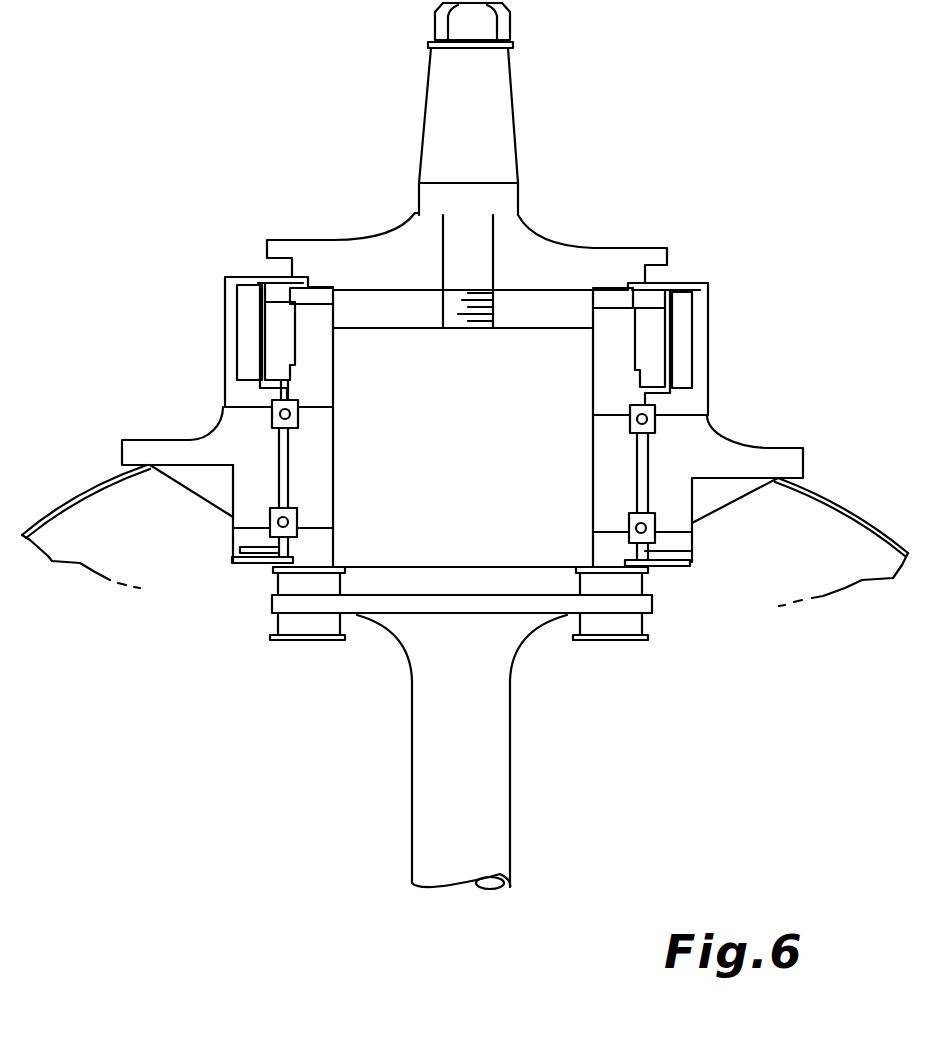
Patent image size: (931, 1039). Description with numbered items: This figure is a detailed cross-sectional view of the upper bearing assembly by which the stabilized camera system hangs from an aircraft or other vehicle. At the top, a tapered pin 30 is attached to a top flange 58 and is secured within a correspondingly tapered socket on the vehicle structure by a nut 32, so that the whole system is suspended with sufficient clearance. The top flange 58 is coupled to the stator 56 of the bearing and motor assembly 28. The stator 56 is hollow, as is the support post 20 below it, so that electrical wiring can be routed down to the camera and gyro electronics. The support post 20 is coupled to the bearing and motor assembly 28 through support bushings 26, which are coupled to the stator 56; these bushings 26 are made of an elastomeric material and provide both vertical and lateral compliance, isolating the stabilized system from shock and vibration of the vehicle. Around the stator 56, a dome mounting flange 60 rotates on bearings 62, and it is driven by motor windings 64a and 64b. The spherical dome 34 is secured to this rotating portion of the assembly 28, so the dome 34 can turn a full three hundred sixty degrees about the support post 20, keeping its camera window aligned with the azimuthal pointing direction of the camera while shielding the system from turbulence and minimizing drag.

The support post 20 is at (512, 750).
The support bushings 26 is at (277, 580).
The bearing and motor assembly 28 is at (708, 395).
The tapered pin 30 is at (512, 120).
The nut 32 is at (512, 28).
The dome 34 is at (858, 523).
The stator 56 is at (334, 508).
The top flange 58 is at (548, 228).
The dome mounting flange 60 is at (783, 444).
The bearings 62 is at (629, 528).
The motor winding 64a is at (653, 303).
The motor winding 64b is at (687, 323).